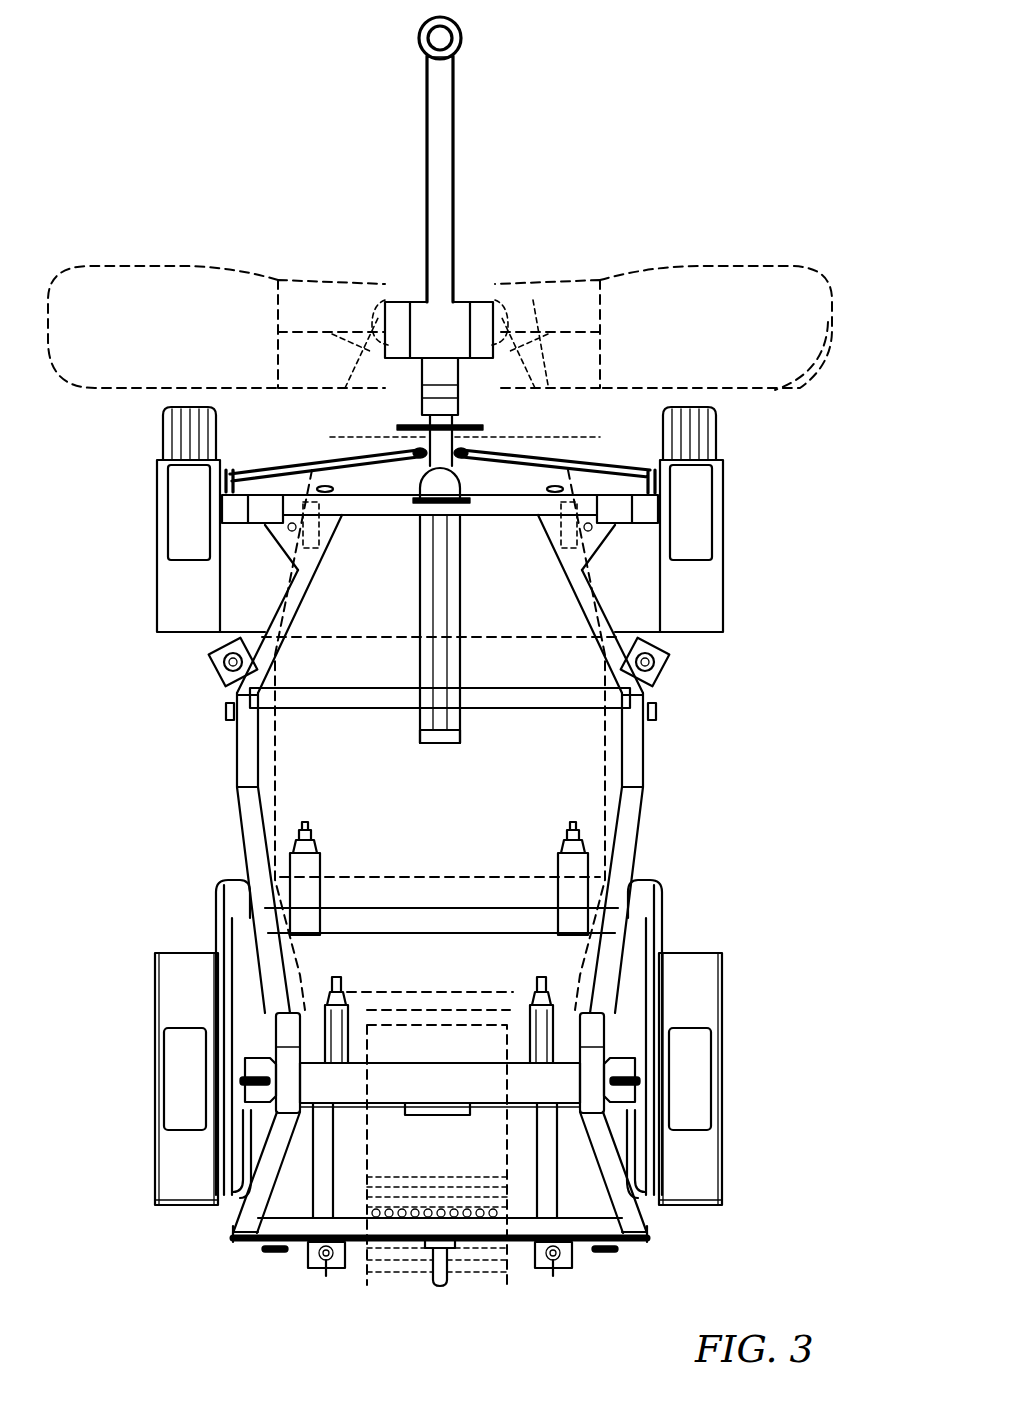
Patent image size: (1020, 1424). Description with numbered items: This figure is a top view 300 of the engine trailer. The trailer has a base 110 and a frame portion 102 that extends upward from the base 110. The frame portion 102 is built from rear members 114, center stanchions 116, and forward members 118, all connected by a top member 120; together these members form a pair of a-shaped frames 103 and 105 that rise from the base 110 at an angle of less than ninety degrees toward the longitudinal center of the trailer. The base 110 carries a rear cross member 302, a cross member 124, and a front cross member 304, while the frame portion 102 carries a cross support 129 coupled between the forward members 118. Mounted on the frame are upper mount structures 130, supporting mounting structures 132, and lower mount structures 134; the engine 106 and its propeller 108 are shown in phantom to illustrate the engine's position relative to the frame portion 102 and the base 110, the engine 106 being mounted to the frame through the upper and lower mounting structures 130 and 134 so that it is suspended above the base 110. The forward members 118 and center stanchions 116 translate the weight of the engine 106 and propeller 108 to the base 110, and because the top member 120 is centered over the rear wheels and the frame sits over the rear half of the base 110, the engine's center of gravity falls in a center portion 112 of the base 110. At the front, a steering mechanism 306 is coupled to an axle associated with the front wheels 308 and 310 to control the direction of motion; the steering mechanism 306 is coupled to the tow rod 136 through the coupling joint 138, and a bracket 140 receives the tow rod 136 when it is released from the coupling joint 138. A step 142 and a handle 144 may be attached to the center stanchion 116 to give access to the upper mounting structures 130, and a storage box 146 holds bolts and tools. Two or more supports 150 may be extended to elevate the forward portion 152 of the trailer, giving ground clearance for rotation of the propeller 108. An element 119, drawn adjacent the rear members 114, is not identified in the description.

The wheelchair accessible vehicle 300 is at (130, 30).
The frame portion 102 is at (628, 950).
The a-shaped frame 103 is at (240, 1270).
The a-shaped frame 105 is at (652, 1264).
The engine 106 is at (278, 790).
The propeller 108 is at (162, 266).
The base 110 is at (240, 743).
The center portion 112 is at (192, 855).
The rear members 114 is at (250, 1207).
The center stanchions 116 is at (255, 1103).
The forward members 118 is at (250, 838).
The bracket 119 is at (243, 1140).
The top member 120 is at (452, 1094).
The cross member 124 is at (505, 697).
The cross support 129 is at (428, 920).
The upper mount structures 130 is at (530, 988).
The supporting mounting structures 132 is at (553, 897).
The lower mount structures 134 is at (567, 867).
The tow rod 136 is at (428, 213).
The coupling joint 138 is at (378, 402).
The bracket 140 is at (432, 623).
The step 142 is at (178, 1088).
The handle 144 is at (250, 1058).
The storage box 146 is at (408, 1110).
The supports 150 is at (222, 662).
The forward portion 152 is at (104, 520).
The rear cross member 302 is at (288, 1222).
The front cross member 304 is at (497, 508).
The steering mechanism 306 is at (543, 458).
The front wheel 308 is at (160, 462).
The front wheel 310 is at (720, 432).